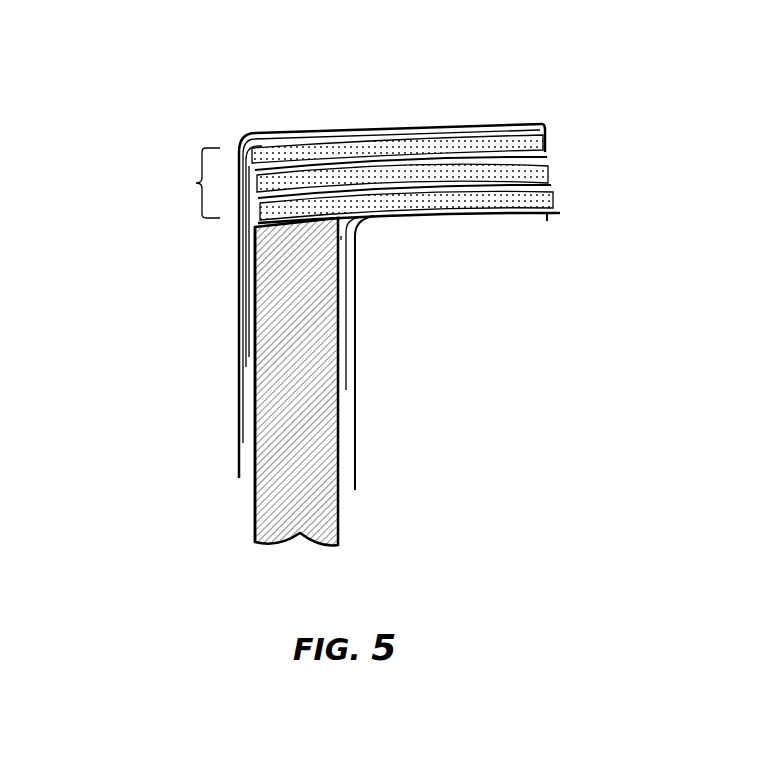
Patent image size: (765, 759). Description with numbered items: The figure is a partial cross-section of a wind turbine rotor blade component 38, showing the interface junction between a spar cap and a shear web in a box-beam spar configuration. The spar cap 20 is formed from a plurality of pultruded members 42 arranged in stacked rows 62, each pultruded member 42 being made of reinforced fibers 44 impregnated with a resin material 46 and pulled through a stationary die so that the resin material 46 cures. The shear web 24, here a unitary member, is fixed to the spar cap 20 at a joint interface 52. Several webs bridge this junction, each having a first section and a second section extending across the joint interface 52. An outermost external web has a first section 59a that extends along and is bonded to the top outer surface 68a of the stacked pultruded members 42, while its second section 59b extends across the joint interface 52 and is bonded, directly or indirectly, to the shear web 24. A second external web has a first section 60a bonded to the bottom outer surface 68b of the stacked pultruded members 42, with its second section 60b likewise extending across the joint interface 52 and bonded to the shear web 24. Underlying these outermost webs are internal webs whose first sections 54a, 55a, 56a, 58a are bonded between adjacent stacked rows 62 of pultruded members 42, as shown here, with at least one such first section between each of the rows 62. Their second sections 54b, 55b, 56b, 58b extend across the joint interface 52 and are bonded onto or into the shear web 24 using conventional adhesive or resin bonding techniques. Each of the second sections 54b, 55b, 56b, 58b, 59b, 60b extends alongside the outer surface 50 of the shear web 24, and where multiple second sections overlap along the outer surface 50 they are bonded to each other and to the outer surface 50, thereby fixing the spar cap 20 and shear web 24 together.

The wind turbine rotor blade component 38 is at (112, 78).
The spar cap 20 is at (433, 116).
The shear web 24 is at (292, 535).
The pultruded member 42 is at (498, 200).
The fibers 44 is at (550, 202).
The resin material 46 is at (537, 148).
The outer surface 50 is at (257, 498).
The joint interface 52 is at (369, 243).
The first section of web 54a is at (428, 217).
The second section of web 54b is at (347, 377).
The first section of web 55a is at (297, 200).
The second section of web 55b is at (245, 438).
The first section of web 56a is at (315, 175).
The second section of web 56b is at (245, 352).
The first section of web 58a is at (382, 132).
The second section of web 58b is at (238, 292).
The first section of web 59a is at (483, 122).
The second section of web 59b is at (238, 398).
The first section of web 60a is at (393, 217).
The second section of web 60b is at (357, 478).
The stacked rows 62 is at (196, 183).
The top outer surface 68a is at (537, 125).
The bottom outer surface 68b is at (548, 217).